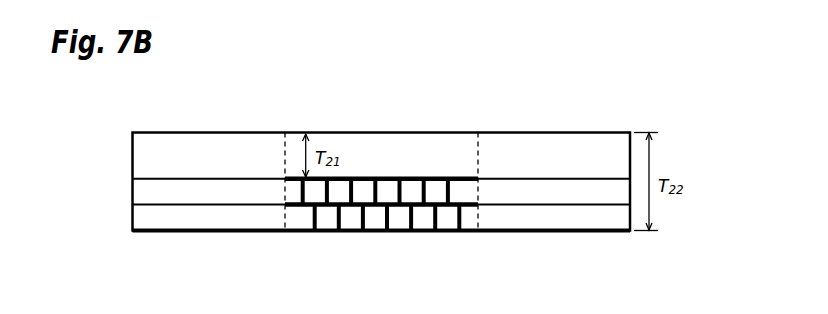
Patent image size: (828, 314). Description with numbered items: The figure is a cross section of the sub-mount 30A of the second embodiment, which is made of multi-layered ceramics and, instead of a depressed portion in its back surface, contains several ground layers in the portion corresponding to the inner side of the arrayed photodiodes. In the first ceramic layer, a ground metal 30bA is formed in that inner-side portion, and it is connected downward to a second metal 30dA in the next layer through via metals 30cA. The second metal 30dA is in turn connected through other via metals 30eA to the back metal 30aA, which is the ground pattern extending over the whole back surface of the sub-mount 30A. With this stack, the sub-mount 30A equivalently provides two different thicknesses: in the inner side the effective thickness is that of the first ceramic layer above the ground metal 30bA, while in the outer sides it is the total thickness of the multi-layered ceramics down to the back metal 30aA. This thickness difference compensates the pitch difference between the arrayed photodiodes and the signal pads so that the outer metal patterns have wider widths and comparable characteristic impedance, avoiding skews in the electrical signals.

The sub-mount 30A is at (586, 131).
The back metal 30aA is at (225, 233).
The ground metal in the first ceramic layer 30bA is at (362, 177).
The via metals 30cA is at (408, 186).
The second metal 30dA is at (347, 210).
The other via metals 30eA is at (411, 216).